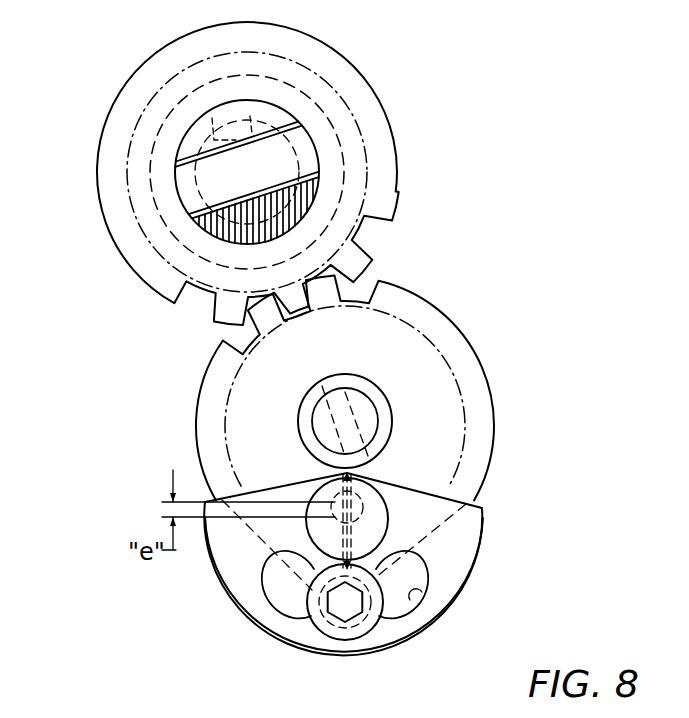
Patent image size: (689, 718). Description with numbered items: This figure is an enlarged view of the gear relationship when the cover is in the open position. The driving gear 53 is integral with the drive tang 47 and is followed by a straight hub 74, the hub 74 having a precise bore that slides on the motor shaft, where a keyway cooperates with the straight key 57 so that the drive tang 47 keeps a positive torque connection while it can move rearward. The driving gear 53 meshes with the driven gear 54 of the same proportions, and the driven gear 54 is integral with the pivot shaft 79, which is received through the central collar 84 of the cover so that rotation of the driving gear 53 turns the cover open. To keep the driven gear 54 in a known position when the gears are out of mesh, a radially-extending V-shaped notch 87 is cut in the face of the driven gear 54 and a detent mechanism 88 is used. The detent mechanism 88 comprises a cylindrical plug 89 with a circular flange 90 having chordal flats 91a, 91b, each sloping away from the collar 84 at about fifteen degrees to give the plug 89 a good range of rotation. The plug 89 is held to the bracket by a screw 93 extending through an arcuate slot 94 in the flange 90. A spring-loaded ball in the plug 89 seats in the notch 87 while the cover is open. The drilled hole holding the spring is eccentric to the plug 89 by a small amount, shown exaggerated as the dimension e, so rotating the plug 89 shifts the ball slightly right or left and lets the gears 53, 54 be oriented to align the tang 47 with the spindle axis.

The drive tang 47 is at (185, 160).
The driving gear 53 is at (397, 202).
The driven gear 54 is at (393, 291).
The straight key 57 is at (253, 118).
The straight hub 74 is at (350, 147).
The pivot shaft 79 is at (366, 392).
The central collar 84 is at (392, 418).
The V-shaped notch 87 is at (389, 522).
The detent mechanism 88 is at (487, 527).
The cylindrical plug 89 is at (372, 485).
The circular flange 90 is at (487, 546).
The chordal flat 91a is at (452, 498).
The chordal flat 91b is at (240, 492).
The screw 93 is at (366, 640).
The arcuate slot 94 is at (412, 598).